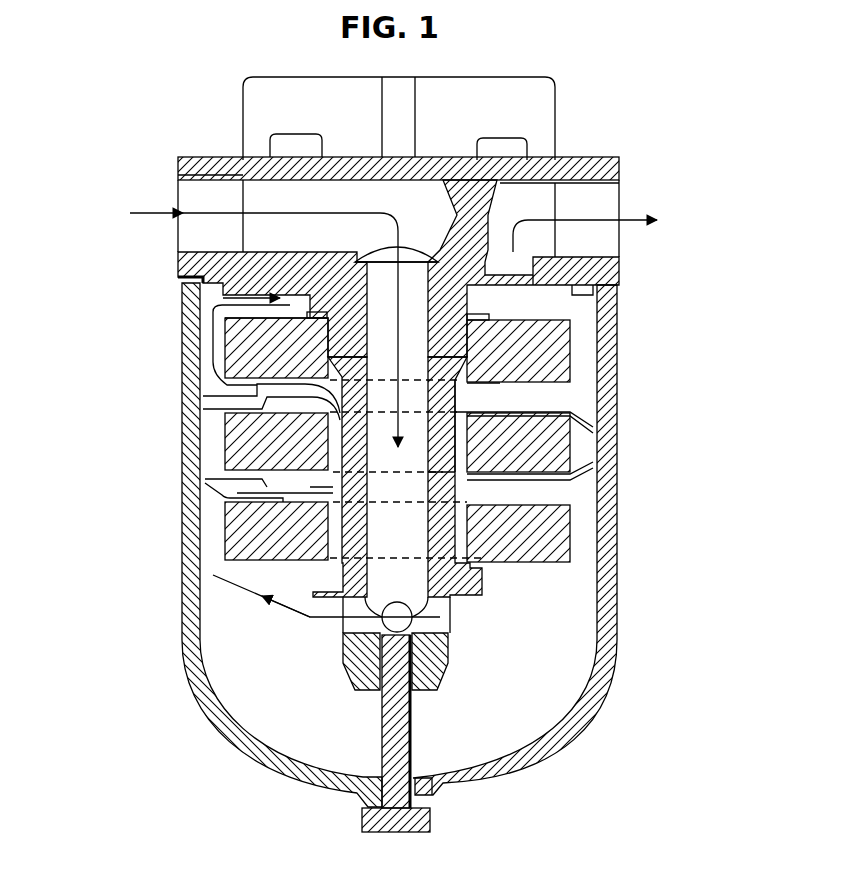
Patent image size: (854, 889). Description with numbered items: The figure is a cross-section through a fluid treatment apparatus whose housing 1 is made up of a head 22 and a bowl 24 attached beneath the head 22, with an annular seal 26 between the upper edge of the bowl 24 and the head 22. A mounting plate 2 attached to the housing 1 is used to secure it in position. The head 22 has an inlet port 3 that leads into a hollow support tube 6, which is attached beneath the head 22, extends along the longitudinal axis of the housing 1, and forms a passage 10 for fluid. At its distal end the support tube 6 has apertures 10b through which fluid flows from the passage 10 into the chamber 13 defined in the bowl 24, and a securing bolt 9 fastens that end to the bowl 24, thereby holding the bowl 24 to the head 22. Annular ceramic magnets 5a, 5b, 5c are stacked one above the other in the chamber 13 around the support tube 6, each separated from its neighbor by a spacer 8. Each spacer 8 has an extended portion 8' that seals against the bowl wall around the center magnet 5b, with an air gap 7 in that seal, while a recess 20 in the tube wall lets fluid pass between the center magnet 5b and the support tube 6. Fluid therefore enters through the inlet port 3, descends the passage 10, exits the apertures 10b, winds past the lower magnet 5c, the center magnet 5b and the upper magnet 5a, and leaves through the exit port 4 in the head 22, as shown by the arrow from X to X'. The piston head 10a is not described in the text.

The housing 1 is at (632, 196).
The mounting plate 2 is at (558, 107).
The inlet port 3 is at (168, 230).
The exit port 4 is at (626, 244).
The upper magnet 5a is at (224, 348).
The center magnet 5b is at (224, 445).
The lower magnet 5c is at (224, 532).
The support tube 6 is at (313, 586).
The air gap 7 is at (580, 447).
The spacer 8 is at (229, 450).
The extended portion 8' is at (568, 429).
The securing bolt 9 is at (360, 821).
The passage 10 is at (417, 397).
The piston head 10a is at (382, 250).
The apertures 10b is at (412, 617).
The chamber 13 is at (297, 728).
The recess 20 is at (458, 460).
The head 22 is at (607, 268).
The bowl 24 is at (593, 679).
The annular seal 26 is at (180, 294).